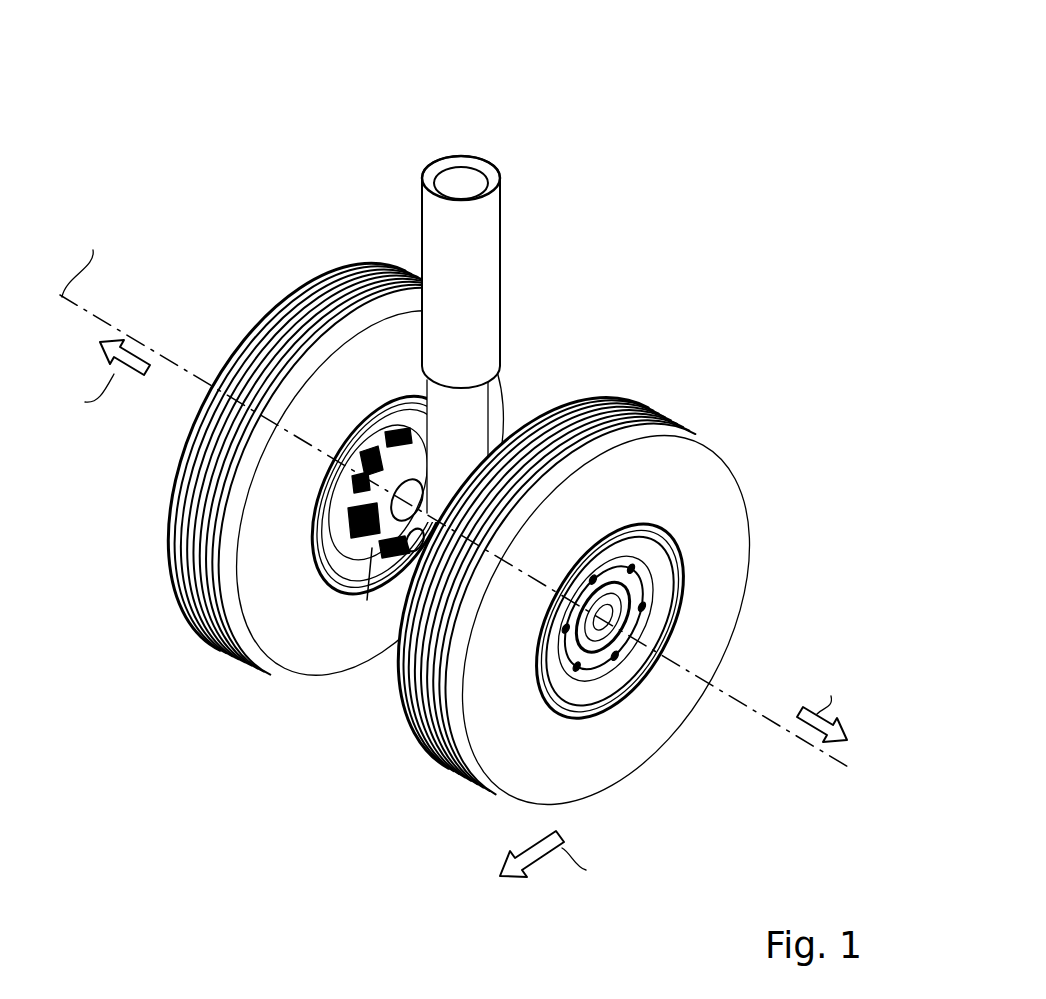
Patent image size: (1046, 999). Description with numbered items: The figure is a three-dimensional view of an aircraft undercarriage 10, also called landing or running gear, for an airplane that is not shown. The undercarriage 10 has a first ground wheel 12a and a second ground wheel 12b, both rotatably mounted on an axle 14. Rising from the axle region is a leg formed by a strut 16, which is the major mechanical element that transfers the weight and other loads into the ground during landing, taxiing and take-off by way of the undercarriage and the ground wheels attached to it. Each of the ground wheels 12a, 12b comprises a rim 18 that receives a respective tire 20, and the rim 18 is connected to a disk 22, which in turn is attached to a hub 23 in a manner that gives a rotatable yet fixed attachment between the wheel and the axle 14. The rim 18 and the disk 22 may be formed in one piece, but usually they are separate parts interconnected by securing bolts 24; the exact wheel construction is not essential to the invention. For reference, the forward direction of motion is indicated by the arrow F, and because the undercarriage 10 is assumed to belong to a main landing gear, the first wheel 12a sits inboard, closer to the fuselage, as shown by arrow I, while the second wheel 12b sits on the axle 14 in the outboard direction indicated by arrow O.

The undercarriage 10 is at (455, 456).
The first ground wheel 12a is at (352, 266).
The second ground wheel 12b is at (624, 398).
The axle 14 is at (367, 600).
The strut 16 is at (471, 263).
The rim 18 is at (633, 706).
The tire 20 is at (370, 399).
The disk 22 is at (640, 593).
The hub 23 is at (633, 607).
The securing bolts 24 is at (650, 698).